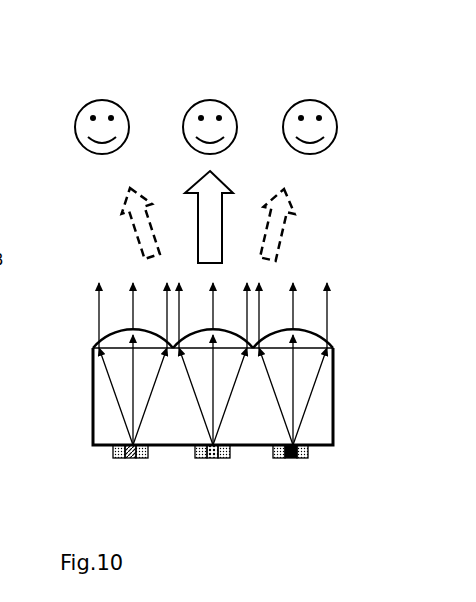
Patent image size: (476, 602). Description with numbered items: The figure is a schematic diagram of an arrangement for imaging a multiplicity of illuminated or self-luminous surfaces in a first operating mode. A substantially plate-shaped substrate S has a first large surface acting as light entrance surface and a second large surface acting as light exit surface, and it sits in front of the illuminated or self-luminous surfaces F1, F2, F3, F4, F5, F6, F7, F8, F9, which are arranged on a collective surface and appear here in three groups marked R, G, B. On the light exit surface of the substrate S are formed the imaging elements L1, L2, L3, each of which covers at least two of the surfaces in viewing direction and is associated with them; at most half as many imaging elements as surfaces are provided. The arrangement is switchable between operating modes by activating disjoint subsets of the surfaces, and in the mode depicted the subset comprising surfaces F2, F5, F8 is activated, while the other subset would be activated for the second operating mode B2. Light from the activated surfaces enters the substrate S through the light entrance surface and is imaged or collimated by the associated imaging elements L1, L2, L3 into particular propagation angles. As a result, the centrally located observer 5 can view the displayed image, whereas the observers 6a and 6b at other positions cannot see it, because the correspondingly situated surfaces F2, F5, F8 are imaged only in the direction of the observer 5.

The observer 6a is at (102, 108).
The observer 5 is at (210, 108).
The observer 6b is at (310, 108).
The operating mode B2 is at (209, 149).
The substrate S is at (213, 396).
The imaging element L1 is at (103, 338).
The imaging element L2 is at (235, 337).
The imaging element L3 is at (318, 340).
The illuminated or self-luminous surface F1 is at (115, 460).
The illuminated or self-luminous surface F2 is at (130, 460).
The illuminated or self-luminous surface F3 is at (142, 460).
The illuminated or self-luminous surface F4 is at (198, 460).
The illuminated or self-luminous surface F5 is at (213, 460).
The illuminated or self-luminous surface F6 is at (227, 460).
The illuminated or self-luminous surface F7 is at (278, 460).
The illuminated or self-luminous surface F8 is at (290, 460).
The illuminated or self-luminous surface F9 is at (303, 460).
The red pixel group R is at (122, 491).
The green pixel group G is at (215, 491).
The blue pixel group B is at (305, 491).